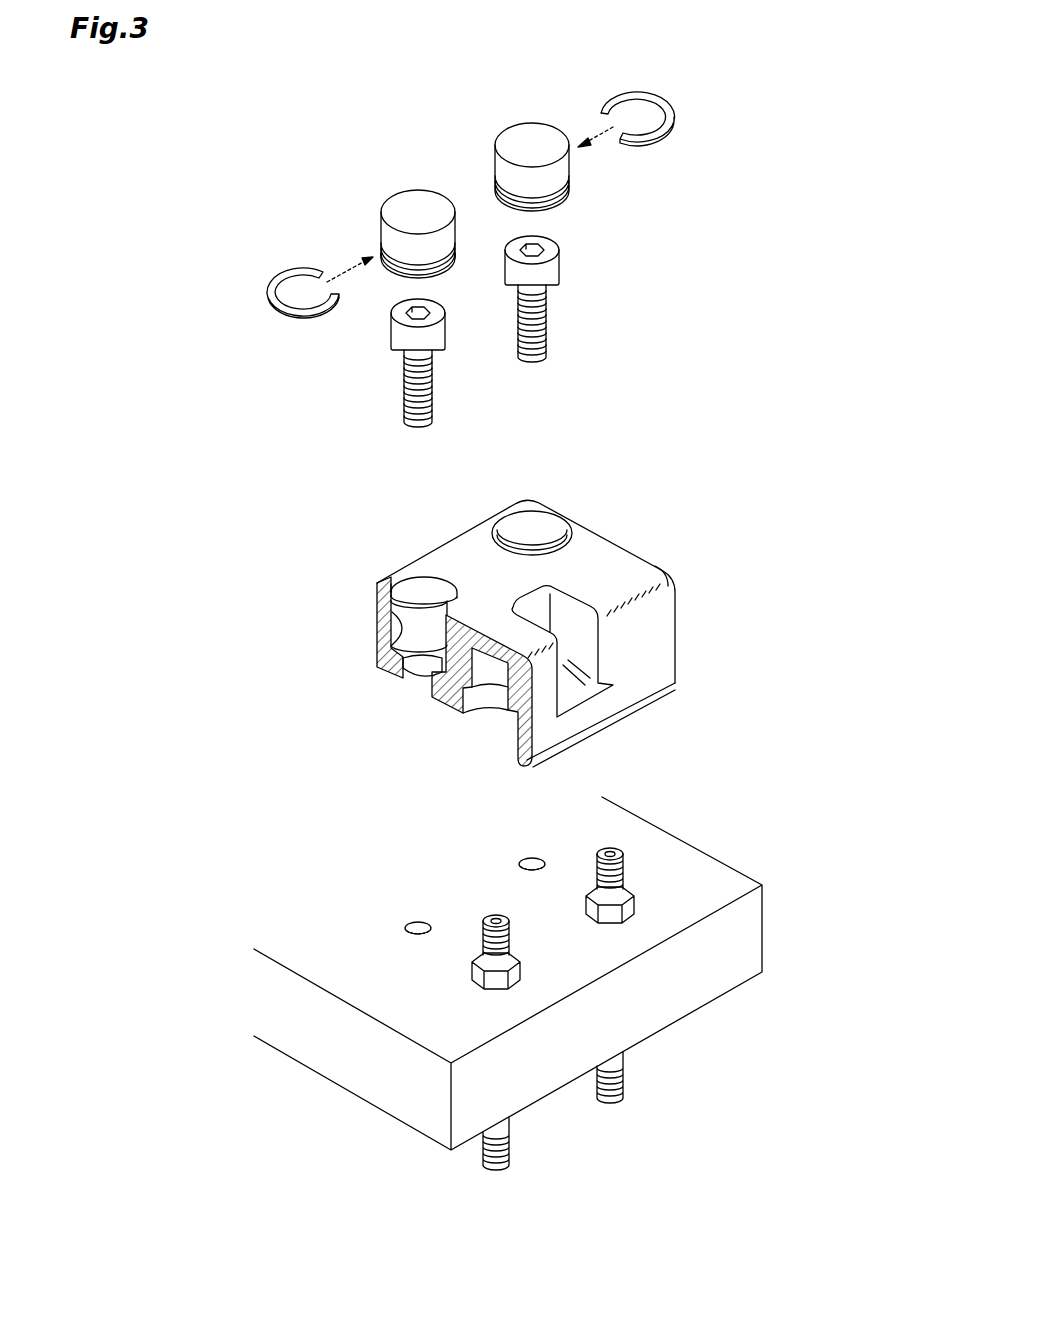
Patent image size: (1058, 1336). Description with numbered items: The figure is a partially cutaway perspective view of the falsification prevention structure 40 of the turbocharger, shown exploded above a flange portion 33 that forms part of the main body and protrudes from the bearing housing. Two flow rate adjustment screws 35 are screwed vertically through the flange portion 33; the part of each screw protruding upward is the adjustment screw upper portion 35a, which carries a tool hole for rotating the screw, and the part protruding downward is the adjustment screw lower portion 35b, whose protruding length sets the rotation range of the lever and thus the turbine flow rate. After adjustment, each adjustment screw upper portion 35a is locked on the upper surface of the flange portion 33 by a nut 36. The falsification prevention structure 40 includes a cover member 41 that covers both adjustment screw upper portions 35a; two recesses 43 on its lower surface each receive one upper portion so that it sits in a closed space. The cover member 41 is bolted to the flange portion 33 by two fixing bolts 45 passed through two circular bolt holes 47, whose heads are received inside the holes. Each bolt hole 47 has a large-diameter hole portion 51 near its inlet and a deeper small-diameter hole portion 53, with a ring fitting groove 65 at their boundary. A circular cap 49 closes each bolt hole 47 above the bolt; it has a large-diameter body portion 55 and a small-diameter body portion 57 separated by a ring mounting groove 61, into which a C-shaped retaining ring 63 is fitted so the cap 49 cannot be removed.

The flange portion 33 is at (760, 950).
The flow rate adjustment screw 35 is at (568, 1014).
The adjustment screw upper portion 35a is at (618, 866).
The adjustment screw lower portion 35b is at (612, 1085).
The nut 36 is at (636, 912).
The falsification prevention structure 40 is at (775, 249).
The cover member 41 is at (495, 610).
The recess 43 is at (512, 722).
The fixing bolt 45 is at (400, 383).
The bolt hole 47 is at (552, 527).
The cap 49 is at (407, 186).
The large-diameter hole portion 51 is at (380, 597).
The small-diameter hole portion 53 is at (400, 620).
The large-diameter body portion 55 is at (383, 237).
The small-diameter body portion 57 is at (387, 262).
The ring mounting groove 61 is at (382, 248).
The retaining ring 63 is at (273, 282).
The ring fitting groove 65 is at (380, 643).